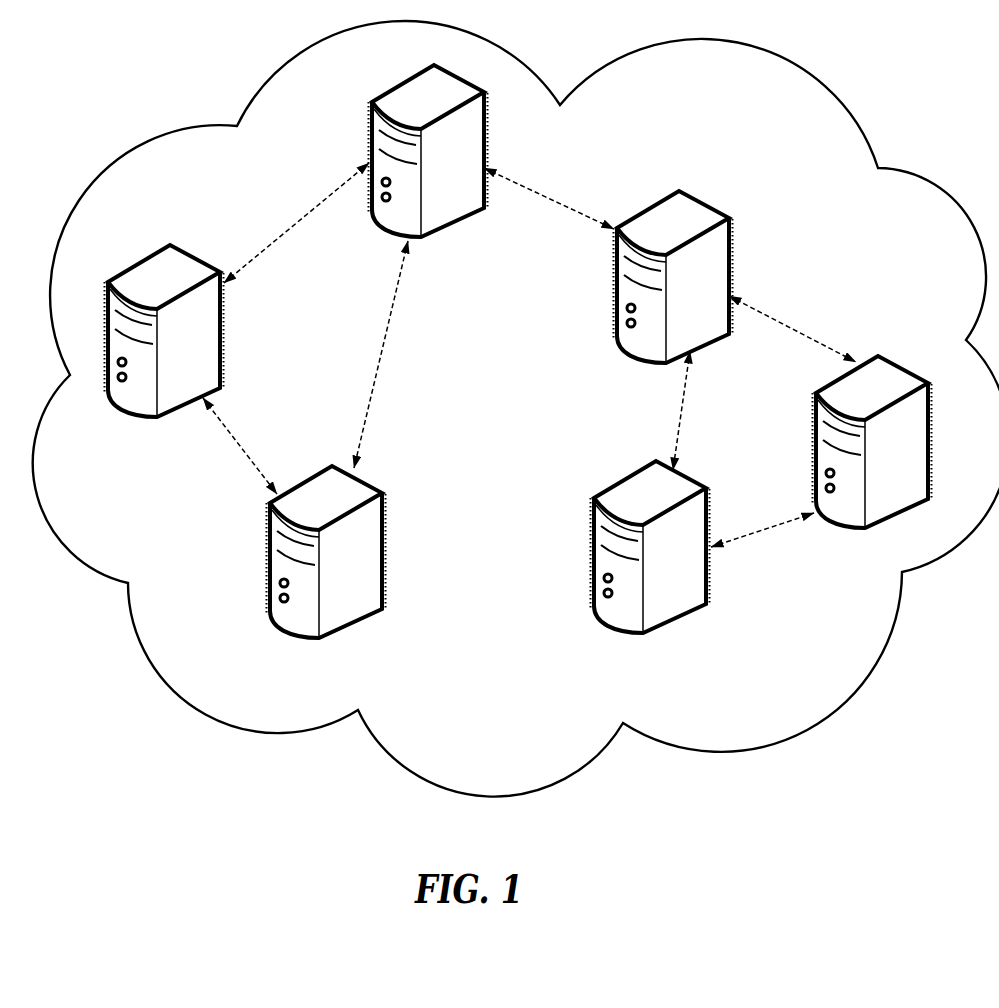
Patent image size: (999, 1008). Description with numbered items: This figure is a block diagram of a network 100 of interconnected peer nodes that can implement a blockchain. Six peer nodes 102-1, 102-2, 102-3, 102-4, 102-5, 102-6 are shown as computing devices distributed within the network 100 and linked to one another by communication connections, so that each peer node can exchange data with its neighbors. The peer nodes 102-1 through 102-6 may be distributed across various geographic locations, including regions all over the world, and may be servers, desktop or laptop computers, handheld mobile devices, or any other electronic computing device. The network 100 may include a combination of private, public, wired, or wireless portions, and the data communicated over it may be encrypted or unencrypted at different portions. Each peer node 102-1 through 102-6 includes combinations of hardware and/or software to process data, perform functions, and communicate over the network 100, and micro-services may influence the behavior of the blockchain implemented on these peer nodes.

The network 100 is at (540, 433).
The peer node 102-1 is at (145, 258).
The peer node 102-2 is at (460, 216).
The peer node 102-3 is at (340, 633).
The peer node 102-4 is at (670, 192).
The peer node 102-5 is at (670, 623).
The peer node 102-6 is at (880, 357).